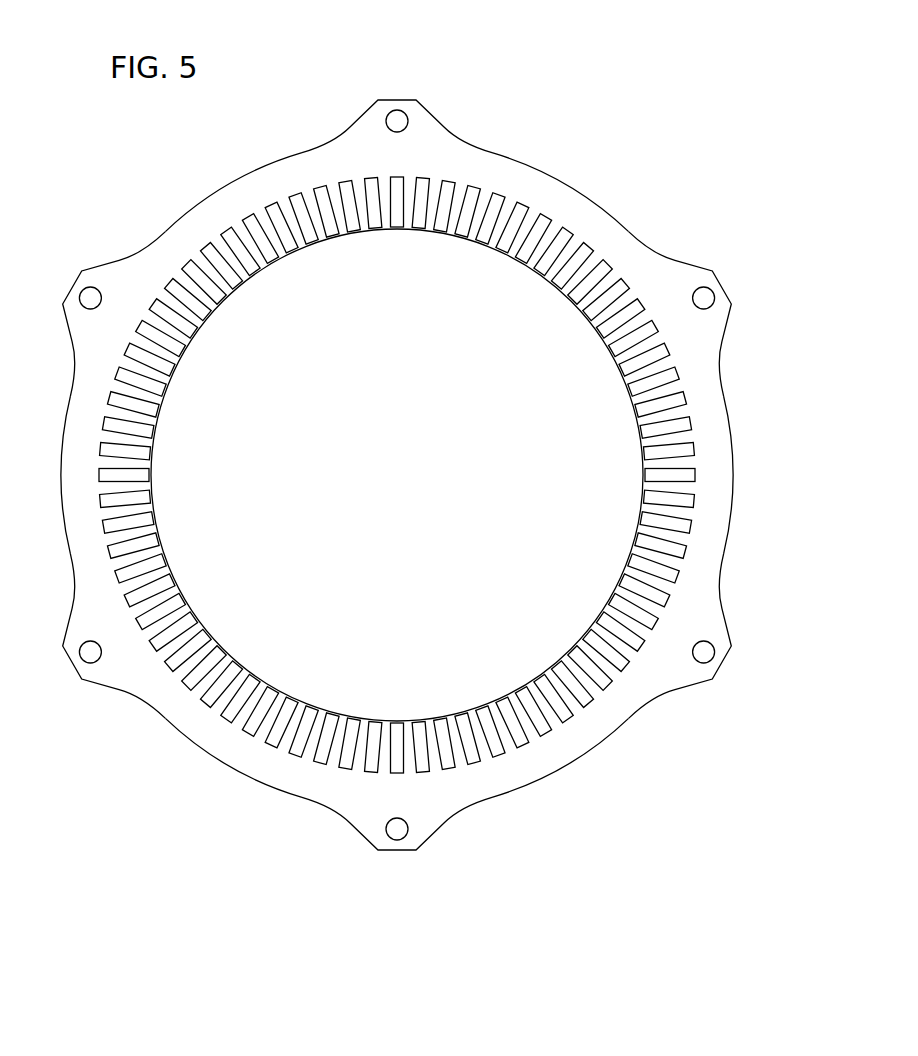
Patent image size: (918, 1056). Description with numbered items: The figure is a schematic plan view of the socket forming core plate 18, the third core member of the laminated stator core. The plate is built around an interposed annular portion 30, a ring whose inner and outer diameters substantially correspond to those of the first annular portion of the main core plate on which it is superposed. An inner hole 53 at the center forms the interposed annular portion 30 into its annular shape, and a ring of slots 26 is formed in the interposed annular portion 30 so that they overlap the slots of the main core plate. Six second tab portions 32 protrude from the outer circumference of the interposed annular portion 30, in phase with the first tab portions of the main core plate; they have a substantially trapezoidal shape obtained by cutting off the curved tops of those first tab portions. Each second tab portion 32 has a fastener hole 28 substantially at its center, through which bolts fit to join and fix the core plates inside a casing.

The socket forming core plate 18 is at (603, 81).
The slots 26 is at (488, 203).
The fastener hole 28 is at (393, 119).
The interposed annular portion 30 is at (609, 232).
The second tab portions 32 is at (410, 98).
The inner hole 53 is at (578, 318).